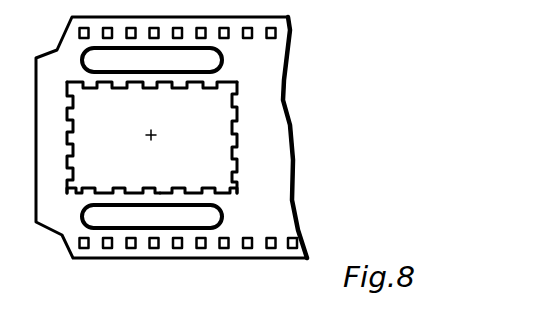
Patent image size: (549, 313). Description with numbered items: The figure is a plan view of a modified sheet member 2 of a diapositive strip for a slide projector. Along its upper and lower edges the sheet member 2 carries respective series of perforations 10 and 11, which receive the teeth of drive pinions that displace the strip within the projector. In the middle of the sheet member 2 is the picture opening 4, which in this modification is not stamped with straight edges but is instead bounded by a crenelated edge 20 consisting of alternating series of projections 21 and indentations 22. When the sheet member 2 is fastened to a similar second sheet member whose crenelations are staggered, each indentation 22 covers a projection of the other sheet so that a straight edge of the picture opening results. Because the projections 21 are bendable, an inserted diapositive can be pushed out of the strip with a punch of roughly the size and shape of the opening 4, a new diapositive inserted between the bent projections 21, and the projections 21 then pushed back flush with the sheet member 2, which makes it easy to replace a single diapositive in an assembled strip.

The sheet member 2 is at (287, 97).
The perforations 10 is at (153, 28).
The perforations 11 is at (178, 249).
The picture opening 4 is at (190, 143).
The crenelated edge 20 is at (232, 133).
The projections 21 is at (143, 190).
The indentations 22 is at (214, 184).